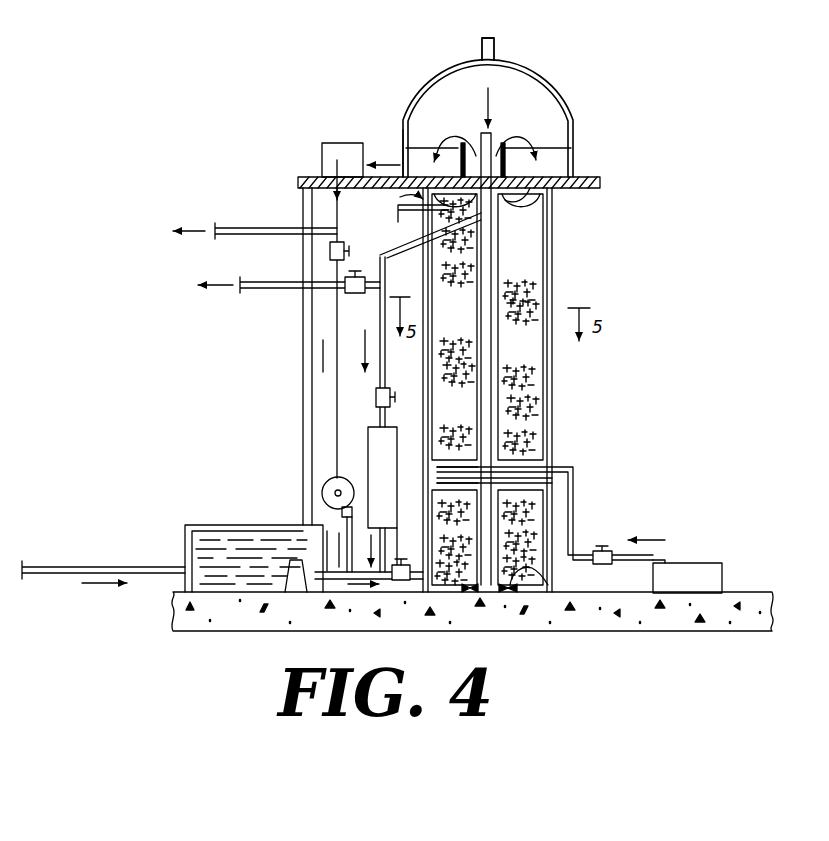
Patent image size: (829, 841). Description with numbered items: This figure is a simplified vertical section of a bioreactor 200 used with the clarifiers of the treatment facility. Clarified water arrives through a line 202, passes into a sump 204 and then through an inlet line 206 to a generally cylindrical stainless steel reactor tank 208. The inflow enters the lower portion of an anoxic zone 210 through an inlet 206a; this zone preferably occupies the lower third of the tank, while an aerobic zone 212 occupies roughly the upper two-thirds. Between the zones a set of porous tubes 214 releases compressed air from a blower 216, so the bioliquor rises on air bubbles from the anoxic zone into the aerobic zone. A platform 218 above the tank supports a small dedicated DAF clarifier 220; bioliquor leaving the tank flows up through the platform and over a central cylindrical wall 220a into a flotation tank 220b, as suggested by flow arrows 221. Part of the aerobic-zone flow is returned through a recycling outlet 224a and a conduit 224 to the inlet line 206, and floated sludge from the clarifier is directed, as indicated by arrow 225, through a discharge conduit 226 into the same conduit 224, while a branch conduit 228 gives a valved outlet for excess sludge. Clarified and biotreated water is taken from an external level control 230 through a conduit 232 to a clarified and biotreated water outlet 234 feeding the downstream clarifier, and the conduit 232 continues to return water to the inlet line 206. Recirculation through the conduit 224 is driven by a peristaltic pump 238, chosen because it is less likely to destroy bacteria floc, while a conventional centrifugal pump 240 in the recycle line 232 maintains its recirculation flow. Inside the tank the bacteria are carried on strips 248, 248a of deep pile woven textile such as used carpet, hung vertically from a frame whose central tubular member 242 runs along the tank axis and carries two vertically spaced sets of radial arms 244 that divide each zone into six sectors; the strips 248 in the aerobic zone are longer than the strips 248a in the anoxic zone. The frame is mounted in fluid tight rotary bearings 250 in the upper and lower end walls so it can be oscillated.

The bioreactor 200 is at (624, 71).
The line 202 is at (145, 566).
The sump 204 is at (185, 548).
The inlet line 206 is at (415, 582).
The inlet 206a is at (325, 526).
The reactor tank 208 is at (553, 398).
The anoxic zone 210 is at (540, 496).
The aerobic zone 212 is at (519, 273).
The porous tubes 214 is at (555, 470).
The blower 216 is at (688, 568).
The platform 218 is at (602, 184).
The DAF clarifier 220 is at (596, 142).
The central cylindrical wall 220a is at (488, 134).
The flotation tank 220b is at (400, 132).
The flow arrows 221 is at (442, 148).
The conduit 224 is at (416, 368).
The recycling outlet 224a is at (430, 226).
The arrow 225 is at (490, 84).
The discharge conduit 226 is at (462, 230).
The branch conduit 228 is at (288, 282).
The external level control 230 is at (322, 160).
The conduit 232 is at (340, 233).
The clarified and biotreated water outlet 234 is at (266, 228).
The peristaltic pump 238 is at (370, 447).
The centrifugal pump 240 is at (322, 493).
The central tubular member 242 is at (515, 260).
The arms 244 is at (418, 128).
The strips 248 is at (486, 372).
The strips 248a is at (482, 531).
The rotary bearings 250 is at (540, 186).